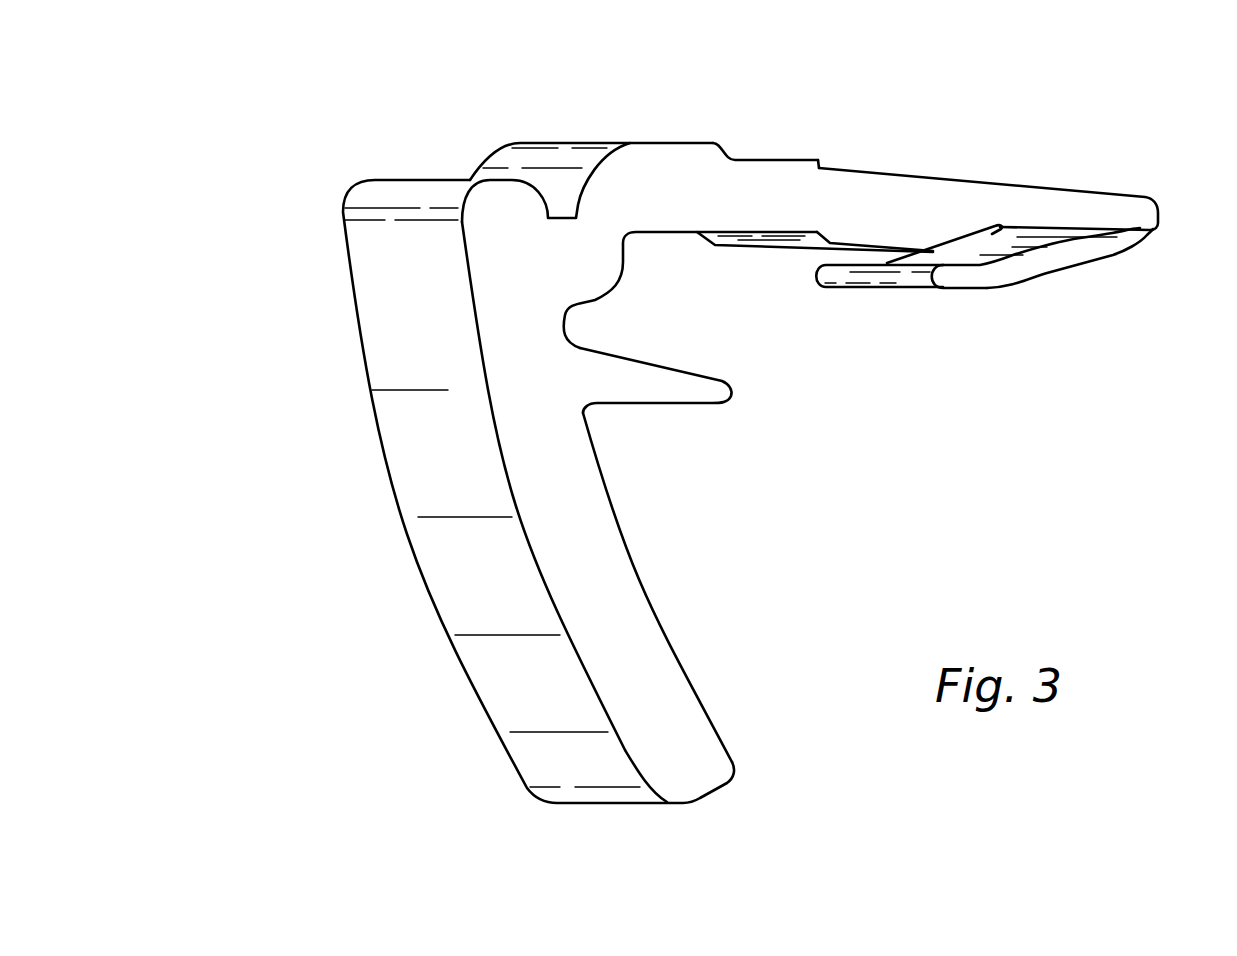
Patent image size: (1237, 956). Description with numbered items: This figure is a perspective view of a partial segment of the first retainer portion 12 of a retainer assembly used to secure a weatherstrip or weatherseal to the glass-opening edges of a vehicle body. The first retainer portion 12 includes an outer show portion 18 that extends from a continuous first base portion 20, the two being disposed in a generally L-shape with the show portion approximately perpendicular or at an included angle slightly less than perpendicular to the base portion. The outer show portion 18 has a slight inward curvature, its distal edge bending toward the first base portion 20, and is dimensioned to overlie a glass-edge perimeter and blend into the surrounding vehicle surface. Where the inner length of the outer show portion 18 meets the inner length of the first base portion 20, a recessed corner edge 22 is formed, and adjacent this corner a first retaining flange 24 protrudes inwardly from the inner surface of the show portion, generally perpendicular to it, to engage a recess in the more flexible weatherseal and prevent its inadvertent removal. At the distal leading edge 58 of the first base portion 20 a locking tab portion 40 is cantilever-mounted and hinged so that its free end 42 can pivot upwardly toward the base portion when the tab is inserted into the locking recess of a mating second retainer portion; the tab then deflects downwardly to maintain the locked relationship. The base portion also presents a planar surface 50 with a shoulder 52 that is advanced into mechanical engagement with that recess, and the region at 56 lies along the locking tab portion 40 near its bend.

The first retainer portion 12 is at (284, 163).
The outer show portion 18 is at (470, 555).
The first base portion 20 is at (615, 143).
The recessed corner edge 22 is at (614, 288).
The first retaining flange 24 is at (683, 397).
The locking tab portion 40 is at (1028, 305).
The free end 42 is at (897, 280).
The planar surface 50 is at (777, 158).
The shoulder 52 is at (822, 166).
The bend 56 is at (1090, 265).
The leading edge 58 is at (1150, 198).